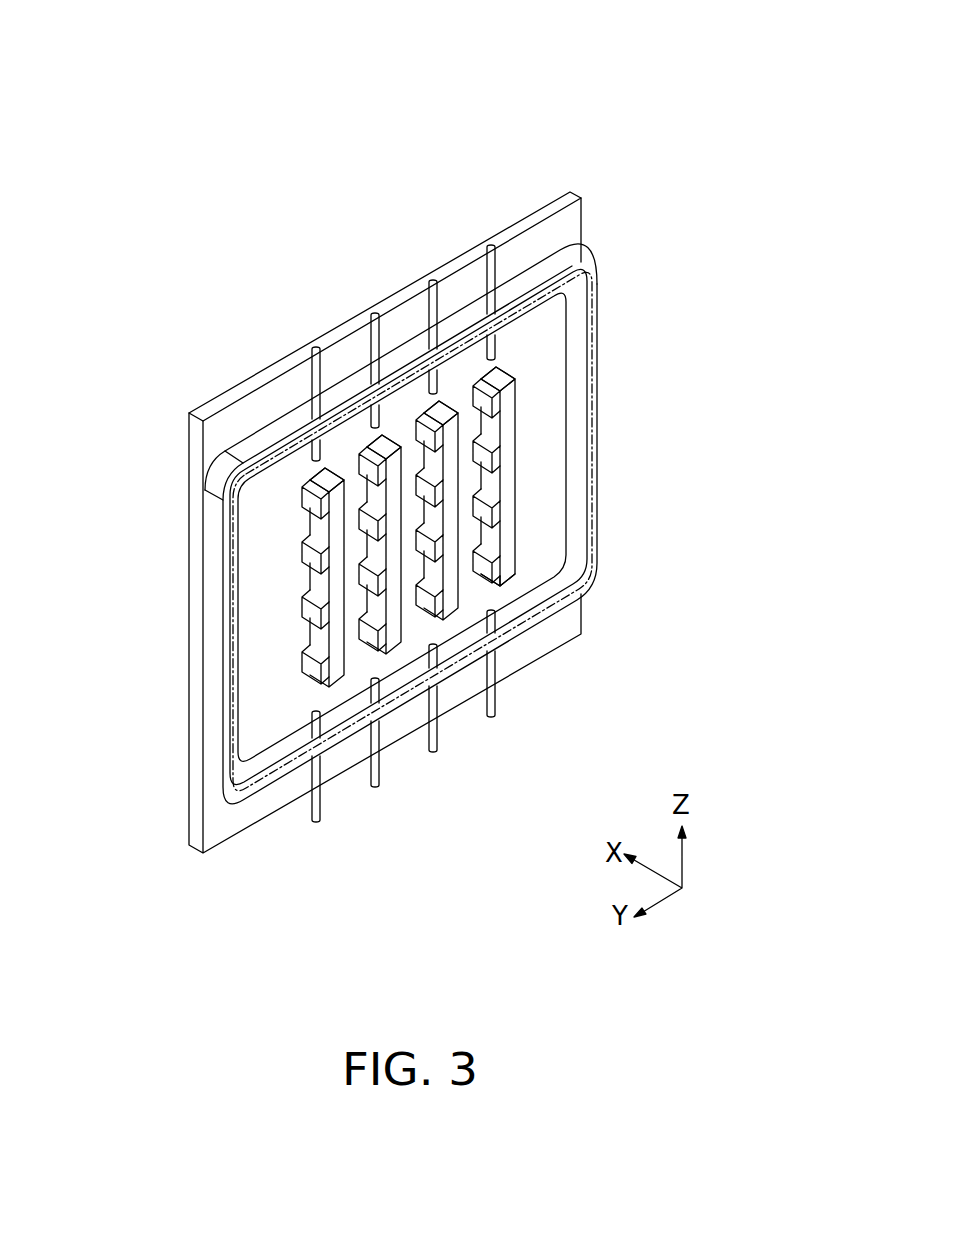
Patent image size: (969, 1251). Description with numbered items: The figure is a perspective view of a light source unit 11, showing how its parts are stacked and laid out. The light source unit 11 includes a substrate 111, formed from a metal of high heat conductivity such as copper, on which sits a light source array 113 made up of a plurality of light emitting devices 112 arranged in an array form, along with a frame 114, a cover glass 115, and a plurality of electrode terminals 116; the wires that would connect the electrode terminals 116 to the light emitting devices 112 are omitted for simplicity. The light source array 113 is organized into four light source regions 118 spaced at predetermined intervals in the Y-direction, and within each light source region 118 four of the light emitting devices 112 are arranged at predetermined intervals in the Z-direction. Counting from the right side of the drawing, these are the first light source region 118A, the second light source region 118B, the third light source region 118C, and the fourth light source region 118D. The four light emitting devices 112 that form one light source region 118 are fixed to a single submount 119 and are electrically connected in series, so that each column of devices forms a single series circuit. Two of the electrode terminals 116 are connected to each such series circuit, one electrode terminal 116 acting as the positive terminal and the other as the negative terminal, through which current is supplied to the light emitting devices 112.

The light source unit 11 is at (566, 116).
The substrate 111 is at (228, 427).
The light emitting device 112 is at (312, 498).
The light source array 113 is at (542, 556).
The frame 114 is at (550, 274).
The cover glass 115 is at (552, 353).
The electrode terminal 116 is at (312, 371).
The light source region 118 is at (415, 318).
The first light source region 118A is at (505, 358).
The second light source region 118B is at (450, 396).
The third light source region 118C is at (393, 431).
The fourth light source region 118D is at (338, 464).
The submount 119 is at (513, 562).